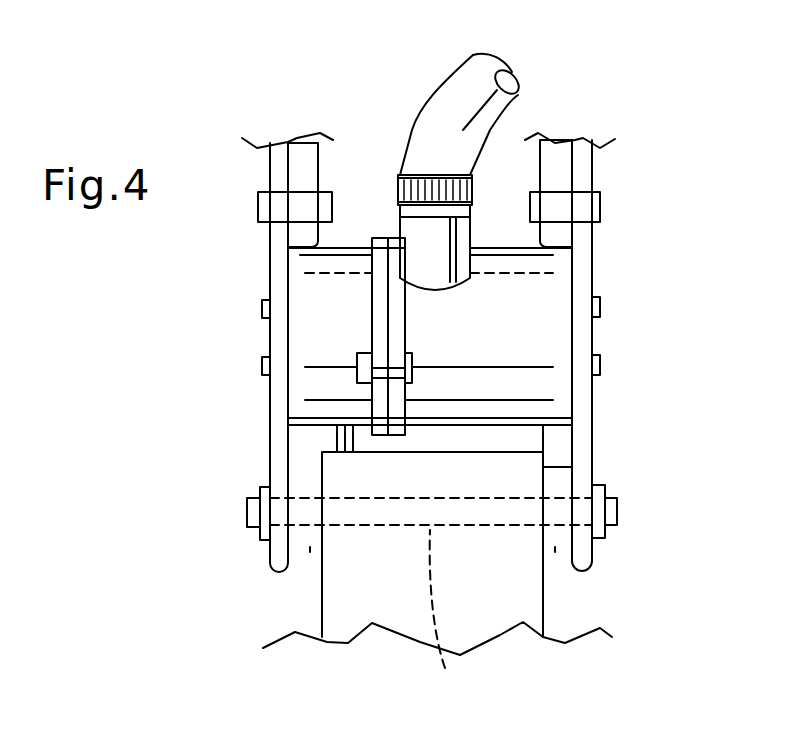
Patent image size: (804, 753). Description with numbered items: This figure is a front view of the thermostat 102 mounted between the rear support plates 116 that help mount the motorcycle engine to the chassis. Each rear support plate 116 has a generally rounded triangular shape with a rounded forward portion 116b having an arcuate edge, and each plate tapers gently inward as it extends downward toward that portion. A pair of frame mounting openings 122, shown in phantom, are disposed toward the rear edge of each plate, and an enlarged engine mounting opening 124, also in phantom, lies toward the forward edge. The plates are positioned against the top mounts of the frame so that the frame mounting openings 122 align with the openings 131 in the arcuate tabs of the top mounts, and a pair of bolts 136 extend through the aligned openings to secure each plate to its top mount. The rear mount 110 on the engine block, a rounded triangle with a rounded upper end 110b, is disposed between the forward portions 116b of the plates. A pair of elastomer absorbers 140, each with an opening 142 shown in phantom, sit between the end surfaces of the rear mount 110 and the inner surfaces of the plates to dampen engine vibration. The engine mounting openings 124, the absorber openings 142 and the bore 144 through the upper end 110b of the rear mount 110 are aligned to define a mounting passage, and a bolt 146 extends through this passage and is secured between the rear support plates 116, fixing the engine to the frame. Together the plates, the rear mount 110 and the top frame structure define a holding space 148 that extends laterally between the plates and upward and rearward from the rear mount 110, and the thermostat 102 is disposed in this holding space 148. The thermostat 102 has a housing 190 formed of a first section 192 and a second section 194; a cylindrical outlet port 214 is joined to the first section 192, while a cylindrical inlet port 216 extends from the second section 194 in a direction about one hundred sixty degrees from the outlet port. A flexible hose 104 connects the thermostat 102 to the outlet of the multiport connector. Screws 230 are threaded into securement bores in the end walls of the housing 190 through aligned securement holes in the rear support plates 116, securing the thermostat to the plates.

The thermostat 102 is at (502, 167).
The flexible hose 104 is at (447, 100).
The rear mount 110 is at (368, 588).
The upper end 110b is at (472, 600).
The rear support plate 116 is at (265, 340).
The forward portion 116b is at (270, 565).
The frame mounting opening 122 is at (278, 223).
The engine mounting opening 124 is at (282, 498).
The opening 131 is at (300, 190).
The bolt 136 is at (258, 207).
The elastomer absorber 140 is at (310, 547).
The opening 142 is at (307, 497).
The bore 144 is at (439, 614).
The bolt 146 is at (617, 512).
The holding space 148 is at (430, 438).
The housing 190 is at (352, 217).
The first section 192 is at (320, 292).
The second section 194 is at (542, 377).
The outlet port 214 is at (303, 438).
The inlet port 216 is at (413, 237).
The screw 230 is at (262, 308).